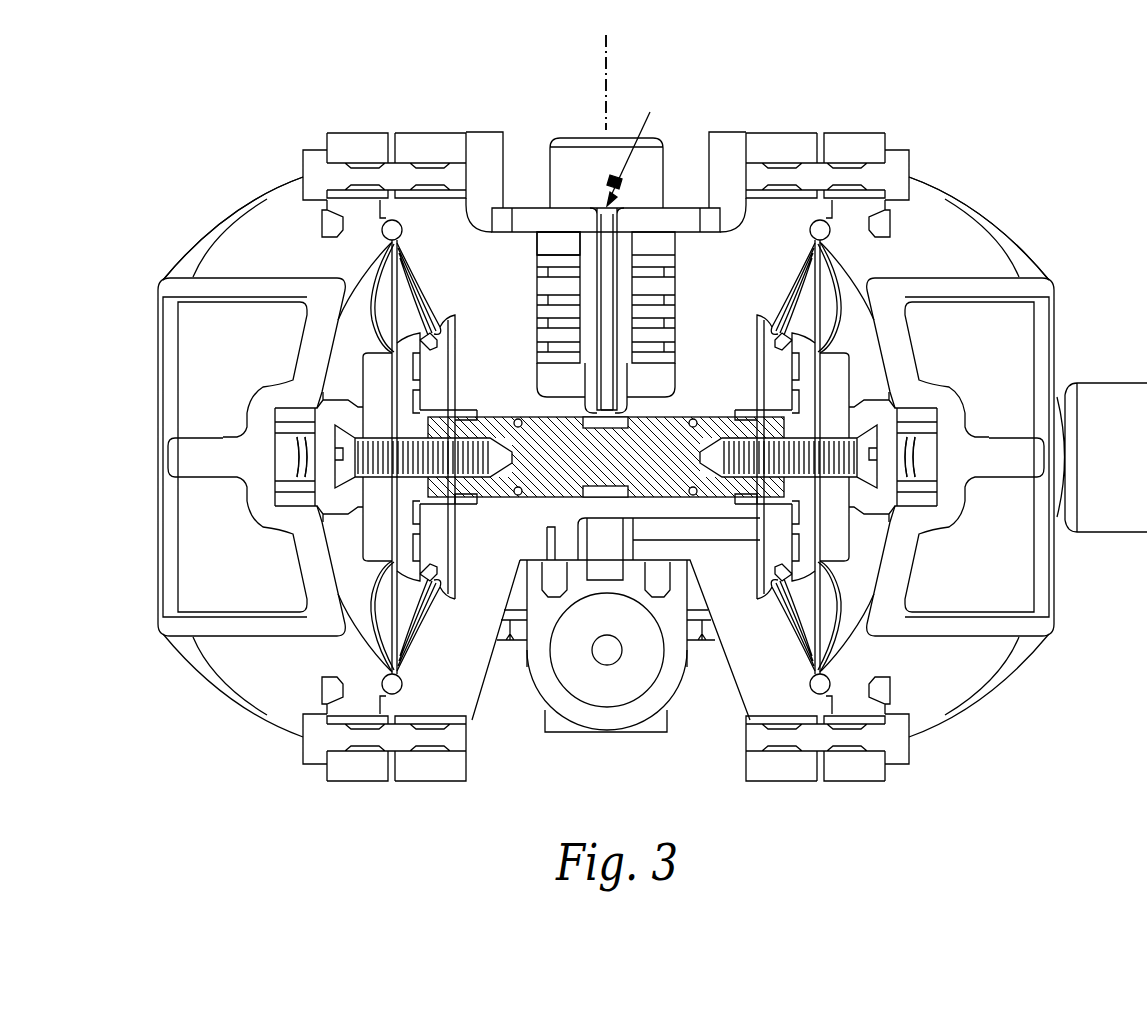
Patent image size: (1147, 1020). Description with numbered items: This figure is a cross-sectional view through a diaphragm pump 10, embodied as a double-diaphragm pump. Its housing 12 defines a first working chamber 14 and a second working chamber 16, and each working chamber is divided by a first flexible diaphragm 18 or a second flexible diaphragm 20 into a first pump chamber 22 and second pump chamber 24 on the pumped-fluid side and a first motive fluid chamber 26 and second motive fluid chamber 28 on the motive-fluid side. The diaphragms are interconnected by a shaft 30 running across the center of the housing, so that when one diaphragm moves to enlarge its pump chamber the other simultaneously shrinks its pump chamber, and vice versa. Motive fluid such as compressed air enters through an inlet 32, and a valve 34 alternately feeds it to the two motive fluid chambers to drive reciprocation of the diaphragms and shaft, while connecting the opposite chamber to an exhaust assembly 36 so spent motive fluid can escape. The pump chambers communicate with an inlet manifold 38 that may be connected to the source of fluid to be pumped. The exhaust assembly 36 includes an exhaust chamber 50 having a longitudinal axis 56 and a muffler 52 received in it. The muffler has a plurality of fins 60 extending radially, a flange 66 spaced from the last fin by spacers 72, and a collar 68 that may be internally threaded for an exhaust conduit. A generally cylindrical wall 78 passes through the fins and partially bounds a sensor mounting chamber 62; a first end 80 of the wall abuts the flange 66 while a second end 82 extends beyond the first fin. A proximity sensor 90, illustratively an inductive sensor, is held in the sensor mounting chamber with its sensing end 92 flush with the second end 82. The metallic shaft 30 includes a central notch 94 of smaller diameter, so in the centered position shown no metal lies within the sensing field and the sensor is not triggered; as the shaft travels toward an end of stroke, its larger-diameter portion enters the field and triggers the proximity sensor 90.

The diaphragm pump 10 is at (1052, 168).
The housing 12 is at (938, 627).
The first working chamber 14 is at (287, 454).
The second working chamber 16 is at (925, 454).
The first flexible diaphragm 18 is at (378, 632).
The second flexible diaphragm 20 is at (834, 630).
The first pump chamber 22 is at (367, 590).
The second pump chamber 24 is at (877, 374).
The first motive fluid chamber 26 is at (386, 293).
The second motive fluid chamber 28 is at (826, 293).
The shaft 30 is at (600, 482).
The inlet 32 is at (638, 733).
The valve 34 is at (607, 688).
The exhaust assembly 36 is at (606, 229).
The inlet manifold 38 is at (1108, 528).
The exhaust chamber 50 is at (653, 397).
The muffler 52 is at (687, 216).
The longitudinal axis of the exhaust chamber 56 is at (608, 50).
The fins 60 is at (547, 358).
The sensor mounting chamber 62 is at (638, 147).
The flange 66 is at (527, 208).
The collar 68 is at (656, 175).
The spacers 72 is at (552, 243).
The cylindrical wall 78 is at (583, 388).
The first end of the wall 80 is at (593, 181).
The second end of the wall 82 is at (627, 408).
The proximity sensor 90 is at (610, 294).
The sensing end 92 is at (597, 428).
The central notch 94 is at (622, 428).